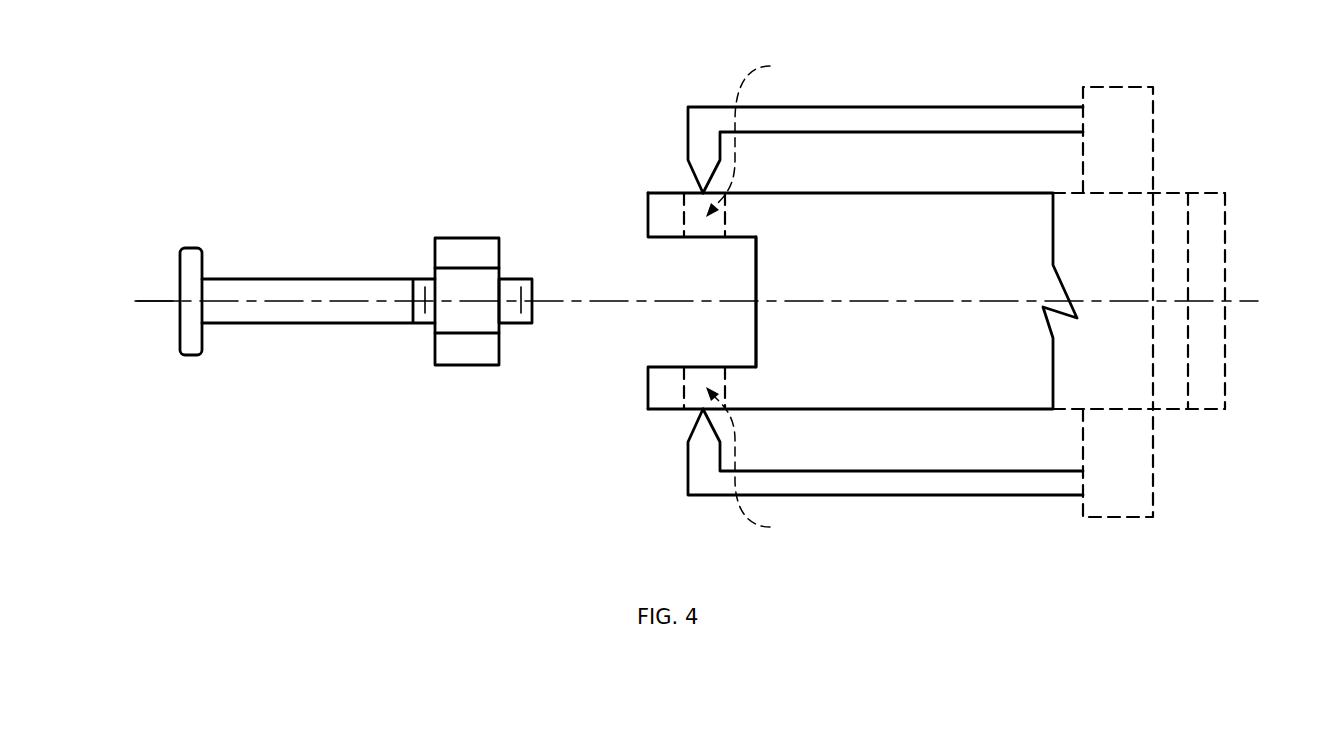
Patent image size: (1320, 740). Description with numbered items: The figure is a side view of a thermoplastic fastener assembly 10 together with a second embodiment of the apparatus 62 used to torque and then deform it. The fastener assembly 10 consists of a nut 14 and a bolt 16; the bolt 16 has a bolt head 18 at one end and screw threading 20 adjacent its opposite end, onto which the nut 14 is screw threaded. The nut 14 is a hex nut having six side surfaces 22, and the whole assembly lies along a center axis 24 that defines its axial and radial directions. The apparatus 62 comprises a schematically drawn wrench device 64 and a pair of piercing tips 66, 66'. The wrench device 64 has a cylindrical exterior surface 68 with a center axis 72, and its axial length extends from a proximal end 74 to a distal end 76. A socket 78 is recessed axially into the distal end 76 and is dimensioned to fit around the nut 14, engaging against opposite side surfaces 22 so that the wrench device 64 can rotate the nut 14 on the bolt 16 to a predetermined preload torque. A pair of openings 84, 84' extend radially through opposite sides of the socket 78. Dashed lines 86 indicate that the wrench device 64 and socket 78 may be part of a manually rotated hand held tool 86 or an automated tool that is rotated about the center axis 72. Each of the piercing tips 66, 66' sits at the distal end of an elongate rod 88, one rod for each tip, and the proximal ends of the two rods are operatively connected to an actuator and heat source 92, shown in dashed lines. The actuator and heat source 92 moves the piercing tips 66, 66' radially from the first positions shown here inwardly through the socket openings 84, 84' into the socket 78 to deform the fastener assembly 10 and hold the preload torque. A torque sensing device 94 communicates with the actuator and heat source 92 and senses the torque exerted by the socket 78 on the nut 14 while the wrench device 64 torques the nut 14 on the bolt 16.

The fastener assembly 10 is at (320, 218).
The nut 14 is at (467, 348).
The bolt 16 is at (318, 312).
The bolt head 18 is at (187, 315).
The screw threading 20 is at (520, 290).
The side surfaces 22 is at (465, 243).
The center axis 24 is at (148, 300).
The apparatus 62 is at (1075, 75).
The wrench device 64 is at (867, 193).
The piercing tip 66 is at (654, 158).
The piercing tip 66' is at (653, 435).
The cylindrical exterior surface 68 is at (993, 193).
The center axis 72 is at (1250, 300).
The proximal end 74 is at (1154, 220).
The distal end 76 is at (648, 212).
The socket 78 is at (645, 349).
The opening 84 is at (753, 136).
The opening 84' is at (756, 463).
The hand held tool 86 is at (1210, 222).
The elongate rod 88 is at (828, 117).
The actuator and heat source 92 is at (1162, 110).
The torque sensing device 94 is at (1170, 392).